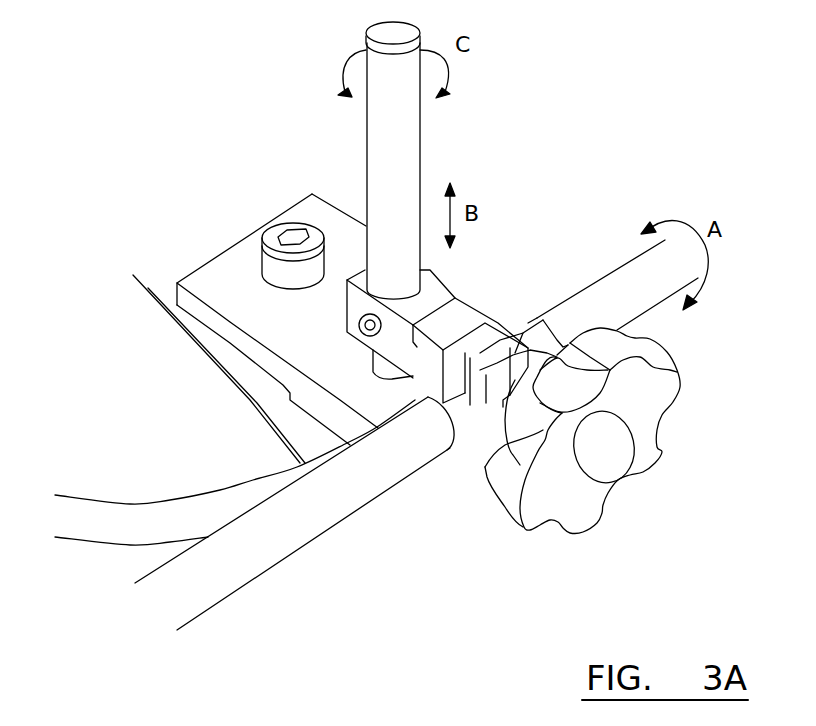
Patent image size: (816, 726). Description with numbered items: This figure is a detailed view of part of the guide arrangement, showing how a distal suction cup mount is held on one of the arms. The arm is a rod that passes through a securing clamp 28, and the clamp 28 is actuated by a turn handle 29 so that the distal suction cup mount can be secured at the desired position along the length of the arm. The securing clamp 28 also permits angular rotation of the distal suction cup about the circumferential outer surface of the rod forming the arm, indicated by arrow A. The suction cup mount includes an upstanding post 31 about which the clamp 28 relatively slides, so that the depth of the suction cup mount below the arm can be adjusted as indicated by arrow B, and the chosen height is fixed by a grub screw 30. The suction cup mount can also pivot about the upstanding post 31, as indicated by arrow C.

The securing clamp 28 is at (518, 306).
The turn handle 29 is at (618, 477).
The grub screw 30 is at (360, 327).
The upstanding post 31 is at (400, 152).